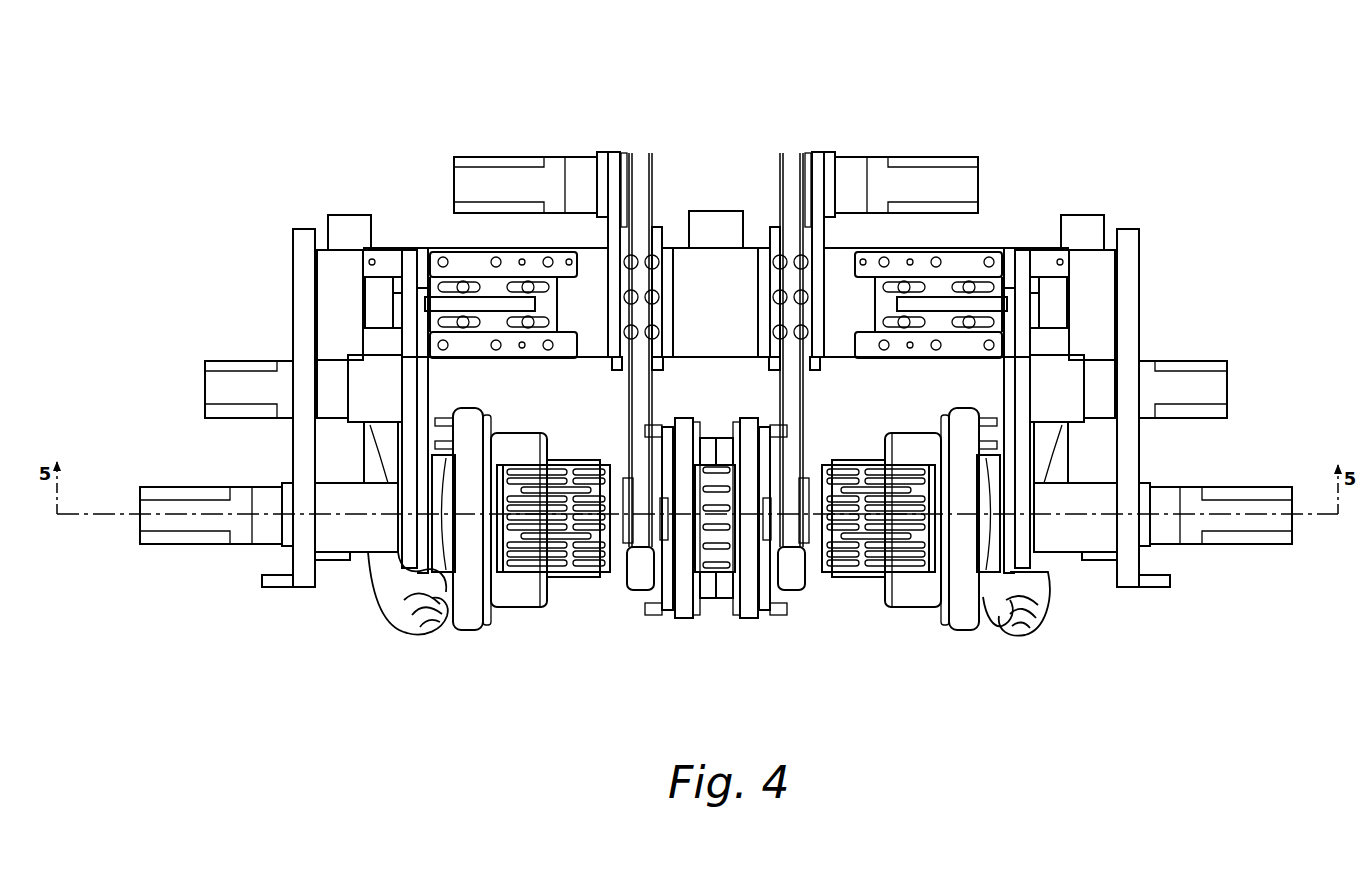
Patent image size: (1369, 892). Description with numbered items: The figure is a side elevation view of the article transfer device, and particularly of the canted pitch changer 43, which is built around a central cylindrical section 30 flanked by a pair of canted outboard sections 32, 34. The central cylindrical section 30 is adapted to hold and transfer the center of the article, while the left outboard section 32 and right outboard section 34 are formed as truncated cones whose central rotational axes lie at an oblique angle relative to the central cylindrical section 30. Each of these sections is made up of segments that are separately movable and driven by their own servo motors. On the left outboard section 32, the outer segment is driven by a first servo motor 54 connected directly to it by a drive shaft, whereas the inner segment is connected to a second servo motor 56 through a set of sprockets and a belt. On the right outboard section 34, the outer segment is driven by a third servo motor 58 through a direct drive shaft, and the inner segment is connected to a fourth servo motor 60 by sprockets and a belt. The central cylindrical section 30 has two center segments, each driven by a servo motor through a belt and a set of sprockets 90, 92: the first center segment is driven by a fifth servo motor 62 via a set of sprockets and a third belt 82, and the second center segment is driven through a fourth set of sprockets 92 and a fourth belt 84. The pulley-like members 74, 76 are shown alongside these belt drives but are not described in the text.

The central cylindrical section 30 is at (716, 606).
The left outboard section 32 is at (524, 626).
The right outboard section 34 is at (911, 617).
The canted pitch changer 43 is at (969, 676).
The first servo motor 54 is at (143, 502).
The second servo motor 56 is at (205, 375).
The third servo motor 58 is at (1272, 493).
The fourth servo motor 60 is at (1210, 373).
The fifth servo motor 62 is at (504, 163).
The first pulley 74 is at (618, 178).
The second pulley 76 is at (808, 180).
The third belt 82 is at (650, 215).
The fourth belt 84 is at (788, 216).
The set of sprockets 90 is at (655, 158).
The fourth set of sprockets 92 is at (785, 155).